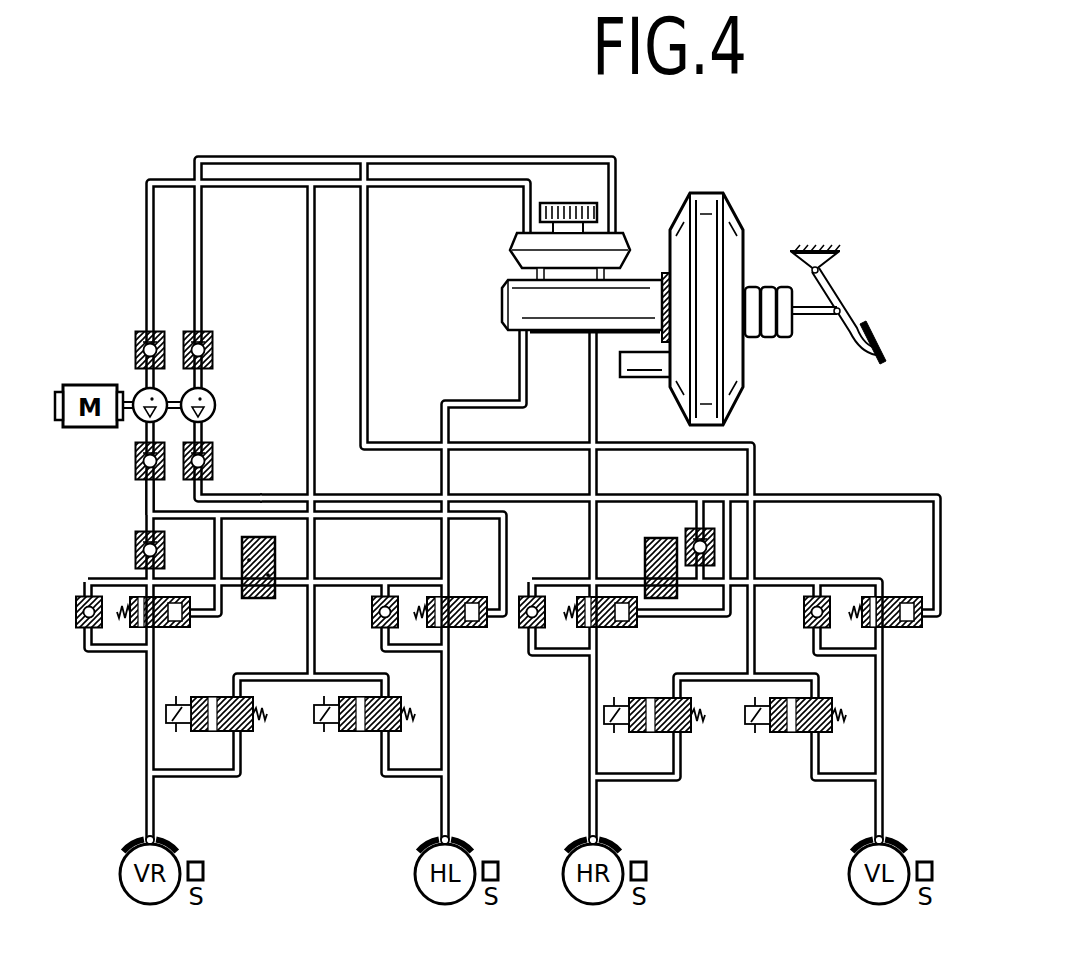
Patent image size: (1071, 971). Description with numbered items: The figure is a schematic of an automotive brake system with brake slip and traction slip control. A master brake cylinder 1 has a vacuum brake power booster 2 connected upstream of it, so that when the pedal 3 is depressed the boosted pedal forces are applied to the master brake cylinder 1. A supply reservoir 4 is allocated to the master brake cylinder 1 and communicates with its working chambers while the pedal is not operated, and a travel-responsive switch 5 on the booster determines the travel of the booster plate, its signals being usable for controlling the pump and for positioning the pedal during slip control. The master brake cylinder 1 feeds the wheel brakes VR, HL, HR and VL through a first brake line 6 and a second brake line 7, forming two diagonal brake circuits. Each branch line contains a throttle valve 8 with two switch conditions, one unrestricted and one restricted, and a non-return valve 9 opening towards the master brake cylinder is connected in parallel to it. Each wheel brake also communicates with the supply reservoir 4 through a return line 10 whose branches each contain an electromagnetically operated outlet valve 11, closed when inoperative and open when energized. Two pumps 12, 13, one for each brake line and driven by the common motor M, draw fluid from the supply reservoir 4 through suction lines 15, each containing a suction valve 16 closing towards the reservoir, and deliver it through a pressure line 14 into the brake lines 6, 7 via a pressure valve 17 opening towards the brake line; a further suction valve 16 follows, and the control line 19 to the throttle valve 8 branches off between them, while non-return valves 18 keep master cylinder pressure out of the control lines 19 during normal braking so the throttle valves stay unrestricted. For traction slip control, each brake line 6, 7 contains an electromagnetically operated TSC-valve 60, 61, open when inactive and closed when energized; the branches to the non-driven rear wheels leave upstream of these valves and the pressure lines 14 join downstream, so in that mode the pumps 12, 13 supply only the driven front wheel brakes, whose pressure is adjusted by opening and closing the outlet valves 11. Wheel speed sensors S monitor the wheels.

The master brake cylinder 1 is at (505, 303).
The vacuum brake power booster 2 is at (738, 222).
The pedal 3 is at (882, 336).
The supply reservoir 4 is at (512, 236).
The travel-responsive switch 5 is at (638, 378).
The first brake line 6 is at (520, 383).
The second brake line 7 is at (595, 383).
The throttle valve 8 is at (158, 630).
The non-return valve 9 is at (84, 630).
The return line 10 is at (316, 448).
The outlet valve 11 is at (250, 733).
The pump 12 is at (140, 393).
The pump 13 is at (210, 393).
The pressure line 14 is at (232, 496).
The suction line 15 is at (285, 182).
The suction valve 16 is at (170, 333).
The pressure valve 17 is at (185, 480).
The non-return valve 18 is at (135, 542).
The control line 19 is at (255, 512).
The TSC-valve 60 is at (258, 598).
The TSC-valve 61 is at (648, 560).